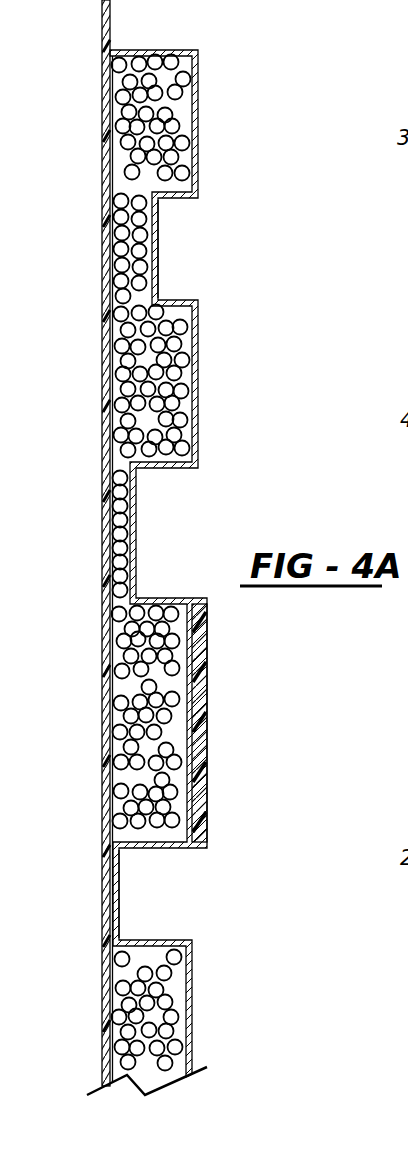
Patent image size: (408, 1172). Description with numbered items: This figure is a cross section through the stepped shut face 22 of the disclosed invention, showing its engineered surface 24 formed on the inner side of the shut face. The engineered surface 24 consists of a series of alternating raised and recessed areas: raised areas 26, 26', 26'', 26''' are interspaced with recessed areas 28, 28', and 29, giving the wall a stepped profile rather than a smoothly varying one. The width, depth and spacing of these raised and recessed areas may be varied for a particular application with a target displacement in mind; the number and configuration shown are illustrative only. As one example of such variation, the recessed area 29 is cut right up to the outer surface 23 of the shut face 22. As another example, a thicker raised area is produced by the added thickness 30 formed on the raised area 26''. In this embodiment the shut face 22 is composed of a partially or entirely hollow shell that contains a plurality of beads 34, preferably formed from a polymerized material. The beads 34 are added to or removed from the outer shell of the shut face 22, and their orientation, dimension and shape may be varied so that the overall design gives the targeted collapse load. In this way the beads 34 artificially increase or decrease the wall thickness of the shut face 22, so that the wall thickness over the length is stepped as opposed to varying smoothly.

The shut face 22 is at (127, 362).
The outer surface 23 is at (103, 523).
The engineered surface 24 is at (167, 93).
The raised area 26 is at (207, 125).
The raised area 26' is at (204, 411).
The raised area 26'' is at (213, 768).
The raised area 26''' is at (205, 1010).
The recessed area 28 is at (223, 249).
The recessed area 28' is at (210, 534).
The recessed area 29 is at (113, 888).
The added thickness 30 is at (197, 682).
The beads 34 is at (147, 697).